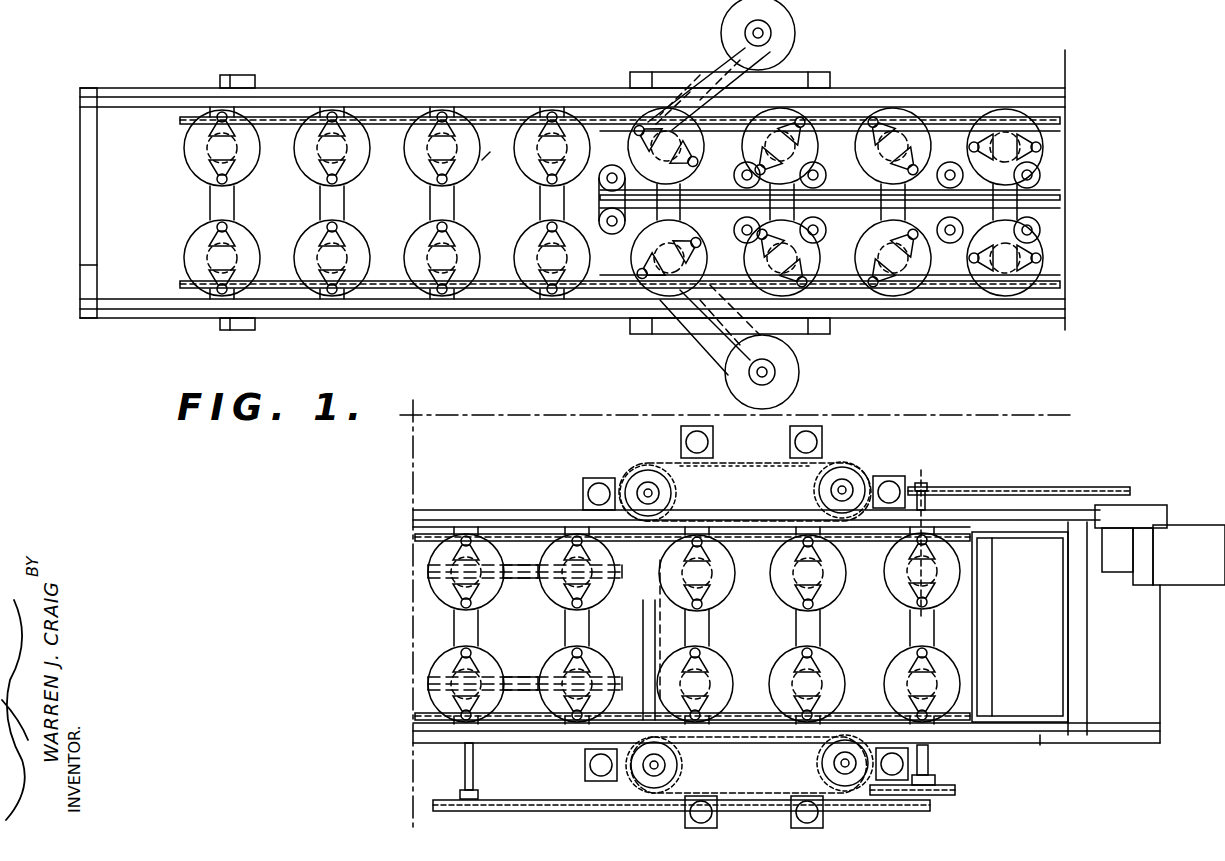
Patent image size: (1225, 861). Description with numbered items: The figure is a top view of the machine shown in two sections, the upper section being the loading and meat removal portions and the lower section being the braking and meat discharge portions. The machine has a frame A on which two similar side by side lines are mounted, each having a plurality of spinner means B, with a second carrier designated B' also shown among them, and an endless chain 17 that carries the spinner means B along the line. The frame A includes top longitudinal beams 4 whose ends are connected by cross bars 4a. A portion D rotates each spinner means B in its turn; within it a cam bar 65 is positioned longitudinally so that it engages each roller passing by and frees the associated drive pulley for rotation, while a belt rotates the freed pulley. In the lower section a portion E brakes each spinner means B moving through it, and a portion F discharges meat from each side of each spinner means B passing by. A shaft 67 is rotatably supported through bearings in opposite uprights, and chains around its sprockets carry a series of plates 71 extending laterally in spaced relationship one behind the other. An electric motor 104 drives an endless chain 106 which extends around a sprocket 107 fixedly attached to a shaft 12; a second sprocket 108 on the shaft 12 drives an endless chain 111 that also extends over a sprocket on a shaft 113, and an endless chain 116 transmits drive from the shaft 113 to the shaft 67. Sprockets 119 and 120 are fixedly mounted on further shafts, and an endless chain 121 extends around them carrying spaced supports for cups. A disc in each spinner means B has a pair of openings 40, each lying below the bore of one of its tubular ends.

The cross bar 4a is at (82, 190).
The frame A is at (80, 268).
The longitudinal beam 4 is at (385, 88).
The endless chain 17 is at (270, 117).
The cam bar 65 is at (628, 118).
The portion for rotating spinner means D is at (750, 120).
The spinner means B is at (613, 378).
The article carrier B' is at (492, 202).
The sprocket 119 is at (650, 470).
The portion for discharging meat F is at (738, 462).
The endless chain 121 is at (820, 470).
The sprocket 120 is at (845, 490).
The sprocket 107 is at (925, 490).
The endless chain 106 is at (1062, 490).
The electric motor 104 is at (1188, 545).
The portion for braking spinner means E is at (522, 560).
The plate 71 is at (440, 615).
The shaft 113 is at (655, 610).
The opening 40 is at (1088, 665).
The shaft 67 is at (458, 795).
The endless chain 116 is at (560, 812).
The endless chain 111 is at (875, 792).
The shaft 12 is at (930, 768).
The second sprocket 108 is at (935, 792).